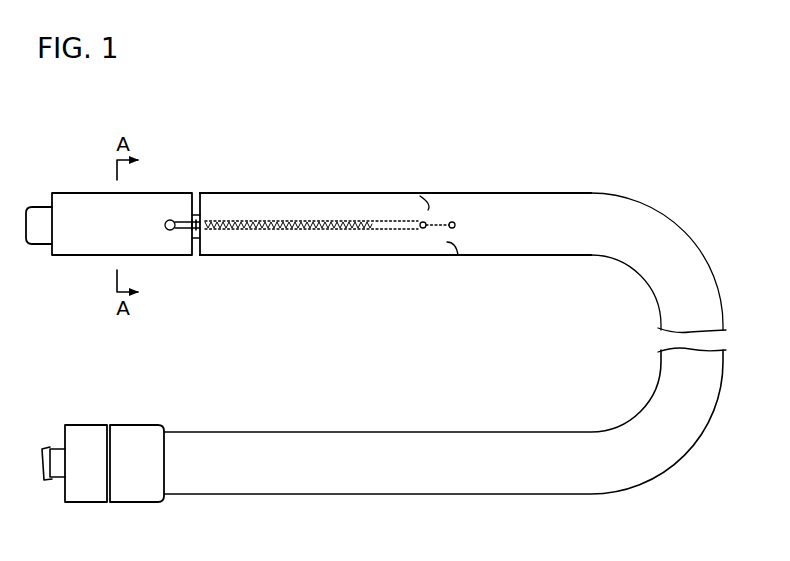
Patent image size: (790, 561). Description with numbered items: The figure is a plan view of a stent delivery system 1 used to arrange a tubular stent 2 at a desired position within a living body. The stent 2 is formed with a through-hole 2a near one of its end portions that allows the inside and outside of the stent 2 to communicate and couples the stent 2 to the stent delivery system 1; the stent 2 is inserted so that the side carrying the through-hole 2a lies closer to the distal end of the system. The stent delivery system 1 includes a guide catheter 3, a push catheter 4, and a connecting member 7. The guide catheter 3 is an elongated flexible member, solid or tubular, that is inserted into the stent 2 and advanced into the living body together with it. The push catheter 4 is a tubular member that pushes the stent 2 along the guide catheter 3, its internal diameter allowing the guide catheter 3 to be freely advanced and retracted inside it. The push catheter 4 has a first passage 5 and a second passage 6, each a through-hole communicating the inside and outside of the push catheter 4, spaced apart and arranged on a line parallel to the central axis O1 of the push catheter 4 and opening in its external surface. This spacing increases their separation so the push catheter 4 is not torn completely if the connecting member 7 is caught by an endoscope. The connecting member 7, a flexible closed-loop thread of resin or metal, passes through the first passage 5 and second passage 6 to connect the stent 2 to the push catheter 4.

The stent delivery system 1 is at (606, 132).
The stent 2 is at (140, 200).
The through-hole 2a is at (172, 220).
The guide catheter 3 is at (40, 208).
The push catheter 4 is at (335, 200).
The first passage 5 is at (420, 228).
The second passage 6 is at (452, 222).
The connecting member 7 is at (186, 224).
The central axis O1 is at (290, 230).